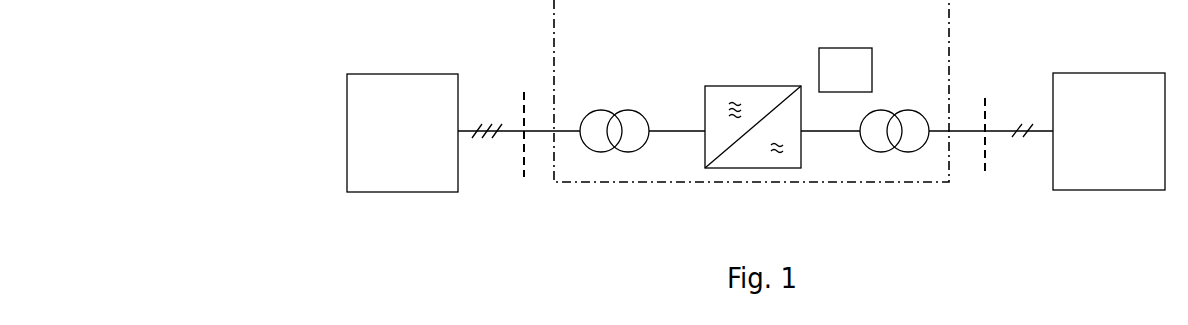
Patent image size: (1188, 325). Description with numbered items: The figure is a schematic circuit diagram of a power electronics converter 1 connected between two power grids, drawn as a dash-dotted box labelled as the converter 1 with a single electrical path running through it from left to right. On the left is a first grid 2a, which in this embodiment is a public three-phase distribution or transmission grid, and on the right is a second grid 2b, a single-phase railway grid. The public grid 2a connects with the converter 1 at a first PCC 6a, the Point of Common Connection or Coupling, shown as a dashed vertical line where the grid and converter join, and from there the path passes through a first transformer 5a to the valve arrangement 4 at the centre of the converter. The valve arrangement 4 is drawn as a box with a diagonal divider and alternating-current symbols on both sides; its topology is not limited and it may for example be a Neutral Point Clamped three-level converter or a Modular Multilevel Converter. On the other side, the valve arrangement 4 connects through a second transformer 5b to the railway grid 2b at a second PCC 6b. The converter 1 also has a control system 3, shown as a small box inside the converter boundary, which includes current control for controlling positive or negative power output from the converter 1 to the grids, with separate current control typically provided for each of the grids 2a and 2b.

The power electronics converter 1 is at (582, 28).
The first grid 2a is at (388, 120).
The second grid 2b is at (1096, 110).
The control system 3 is at (853, 82).
The valve arrangement 4 is at (747, 168).
The first transformer 5a is at (620, 170).
The second transformer 5b is at (896, 168).
The first PCC 6a is at (525, 92).
The second PCC 6b is at (985, 98).